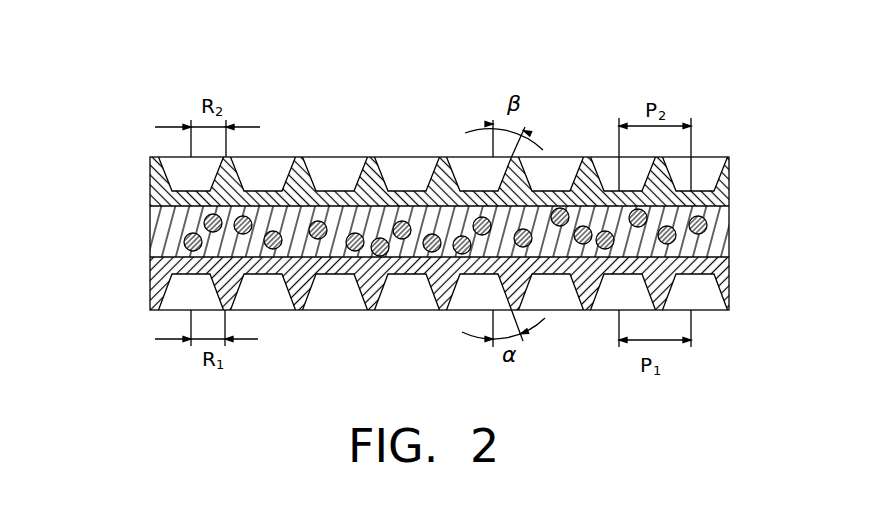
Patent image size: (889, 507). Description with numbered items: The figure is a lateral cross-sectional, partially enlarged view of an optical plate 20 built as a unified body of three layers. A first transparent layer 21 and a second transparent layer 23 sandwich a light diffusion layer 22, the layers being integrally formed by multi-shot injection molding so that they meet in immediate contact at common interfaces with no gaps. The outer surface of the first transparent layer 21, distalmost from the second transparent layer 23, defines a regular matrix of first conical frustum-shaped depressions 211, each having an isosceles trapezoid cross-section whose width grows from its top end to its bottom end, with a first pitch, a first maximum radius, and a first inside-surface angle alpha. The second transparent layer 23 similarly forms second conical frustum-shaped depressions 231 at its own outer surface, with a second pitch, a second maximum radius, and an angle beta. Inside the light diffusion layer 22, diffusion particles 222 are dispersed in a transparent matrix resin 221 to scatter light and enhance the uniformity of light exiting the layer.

The optical plate 20 is at (446, 71).
The first transparent layer 21 is at (482, 306).
The first conical frustum-shaped depressions 211 is at (706, 299).
The light diffusion layer 22 is at (374, 249).
The transparent matrix resin 221 is at (183, 215).
The diffusion particles 222 is at (175, 277).
The second transparent layer 23 is at (481, 186).
The second conical frustum-shaped depressions 231 is at (707, 164).